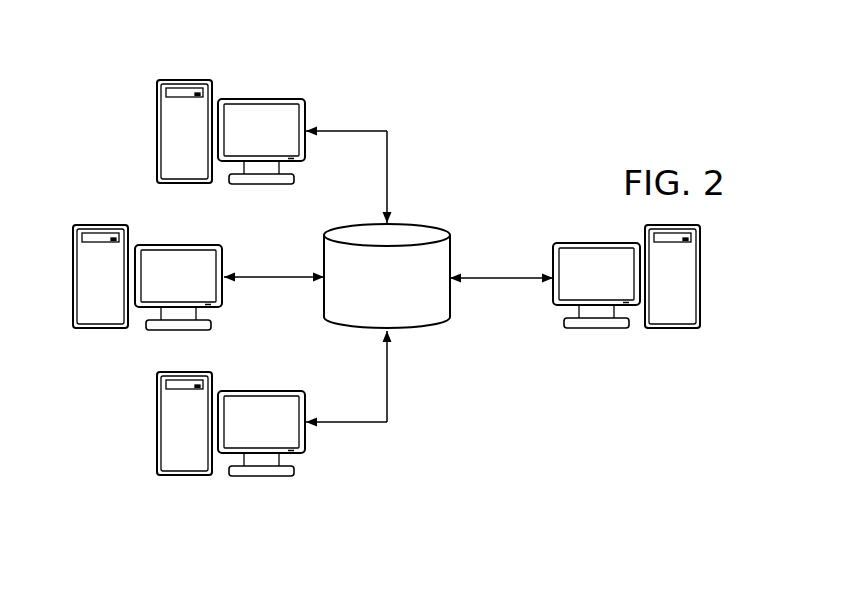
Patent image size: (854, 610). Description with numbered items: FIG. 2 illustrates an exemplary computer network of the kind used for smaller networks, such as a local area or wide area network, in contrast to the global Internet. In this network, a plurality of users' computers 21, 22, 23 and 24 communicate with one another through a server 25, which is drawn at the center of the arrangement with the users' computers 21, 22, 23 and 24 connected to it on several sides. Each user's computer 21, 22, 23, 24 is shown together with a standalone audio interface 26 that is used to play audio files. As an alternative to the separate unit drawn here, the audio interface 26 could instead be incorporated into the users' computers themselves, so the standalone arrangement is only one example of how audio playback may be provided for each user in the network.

The user's computer 21 is at (262, 99).
The user's computer 22 is at (178, 245).
The user's computer 23 is at (262, 477).
The user's computer 24 is at (595, 332).
The server 25 is at (418, 330).
The standalone audio interface 26 is at (157, 120).